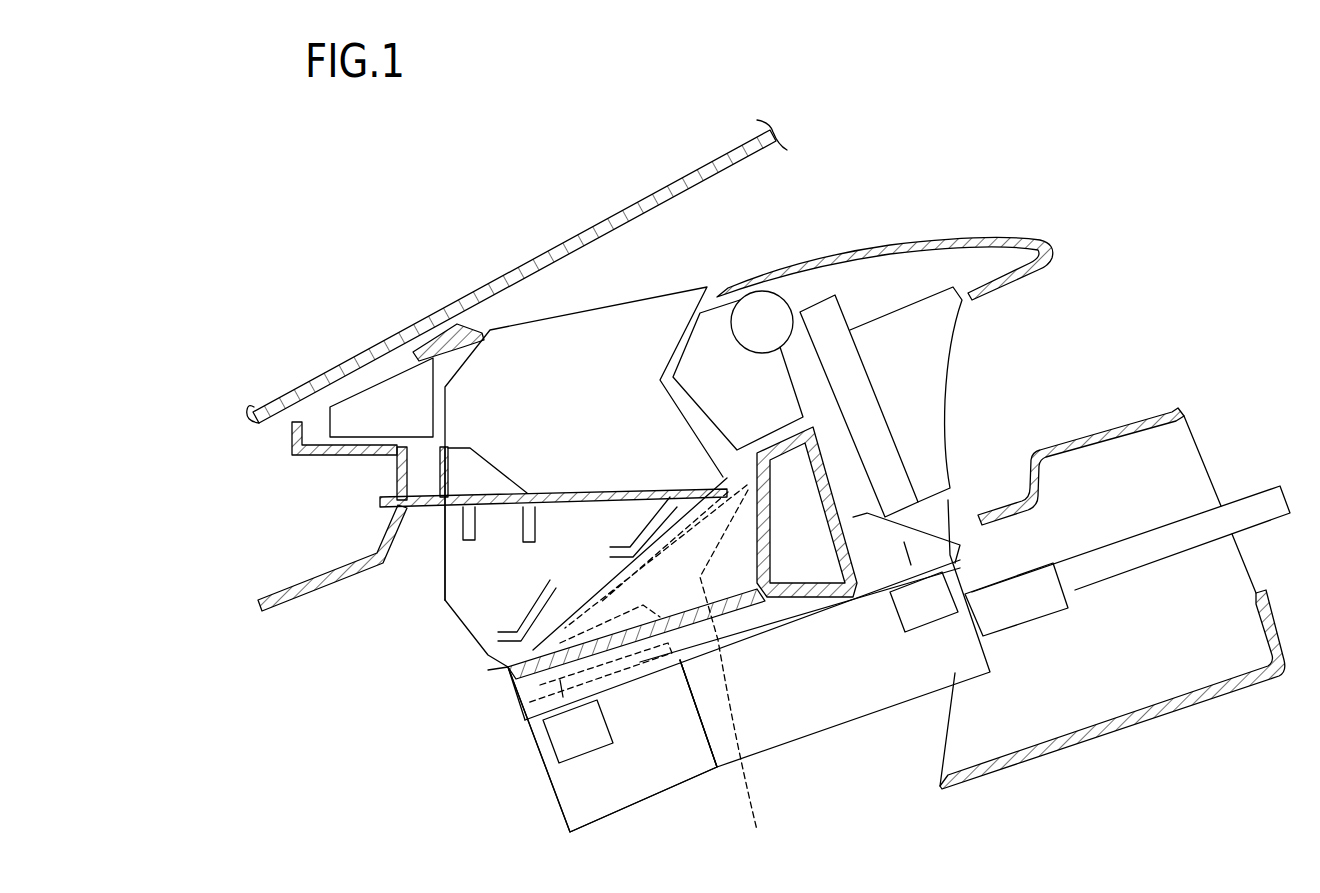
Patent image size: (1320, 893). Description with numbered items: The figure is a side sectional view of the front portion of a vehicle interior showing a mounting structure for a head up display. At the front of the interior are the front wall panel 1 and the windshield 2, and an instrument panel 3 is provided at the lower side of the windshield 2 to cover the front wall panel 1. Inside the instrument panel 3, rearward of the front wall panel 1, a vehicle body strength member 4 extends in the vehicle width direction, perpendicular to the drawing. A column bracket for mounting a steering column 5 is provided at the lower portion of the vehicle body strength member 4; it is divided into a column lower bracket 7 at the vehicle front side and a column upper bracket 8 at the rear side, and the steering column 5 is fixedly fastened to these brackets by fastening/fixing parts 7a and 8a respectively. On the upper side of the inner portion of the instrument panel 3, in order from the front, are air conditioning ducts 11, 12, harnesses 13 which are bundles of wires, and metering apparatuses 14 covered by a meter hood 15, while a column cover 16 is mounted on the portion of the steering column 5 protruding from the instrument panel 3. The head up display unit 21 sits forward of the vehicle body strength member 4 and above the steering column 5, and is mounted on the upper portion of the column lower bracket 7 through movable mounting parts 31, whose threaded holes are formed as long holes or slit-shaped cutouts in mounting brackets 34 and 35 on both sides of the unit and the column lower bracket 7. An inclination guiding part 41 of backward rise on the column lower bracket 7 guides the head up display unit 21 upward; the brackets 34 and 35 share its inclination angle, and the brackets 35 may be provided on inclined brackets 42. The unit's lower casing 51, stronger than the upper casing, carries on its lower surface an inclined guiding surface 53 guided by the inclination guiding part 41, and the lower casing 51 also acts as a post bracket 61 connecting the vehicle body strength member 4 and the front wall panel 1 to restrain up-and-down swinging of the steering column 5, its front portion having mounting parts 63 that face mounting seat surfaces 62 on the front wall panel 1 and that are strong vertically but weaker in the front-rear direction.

The front wall panel 1 is at (283, 600).
The windshield 2 is at (695, 170).
The instrument panel 3 is at (473, 325).
The vehicle body strength member 4 is at (827, 600).
The steering column 5 is at (670, 797).
The column lower bracket 7 is at (508, 665).
The fastening/fixing part 7a is at (577, 733).
The column upper bracket 8 is at (995, 468).
The fastening/fixing part 8a is at (921, 585).
The air conditioning duct 11 is at (355, 413).
The air conditioning duct 12 is at (797, 377).
The harness 13 is at (788, 293).
The metering apparatus 14 is at (947, 367).
The meter hood 15 is at (1027, 240).
The column cover 16 is at (1180, 712).
The head up display unit 21 is at (615, 292).
The movable mounting part 31 is at (630, 510).
The mounting bracket 34 is at (520, 648).
The mounting bracket 35 is at (508, 667).
The inclination guiding part 41 is at (745, 603).
The bracket 42 is at (504, 677).
The lower casing 51 is at (440, 568).
The inclined guiding surface 53 is at (667, 673).
The post bracket 61 is at (457, 532).
The mounting seat surface 62 is at (440, 472).
The mounting part 63 is at (497, 465).